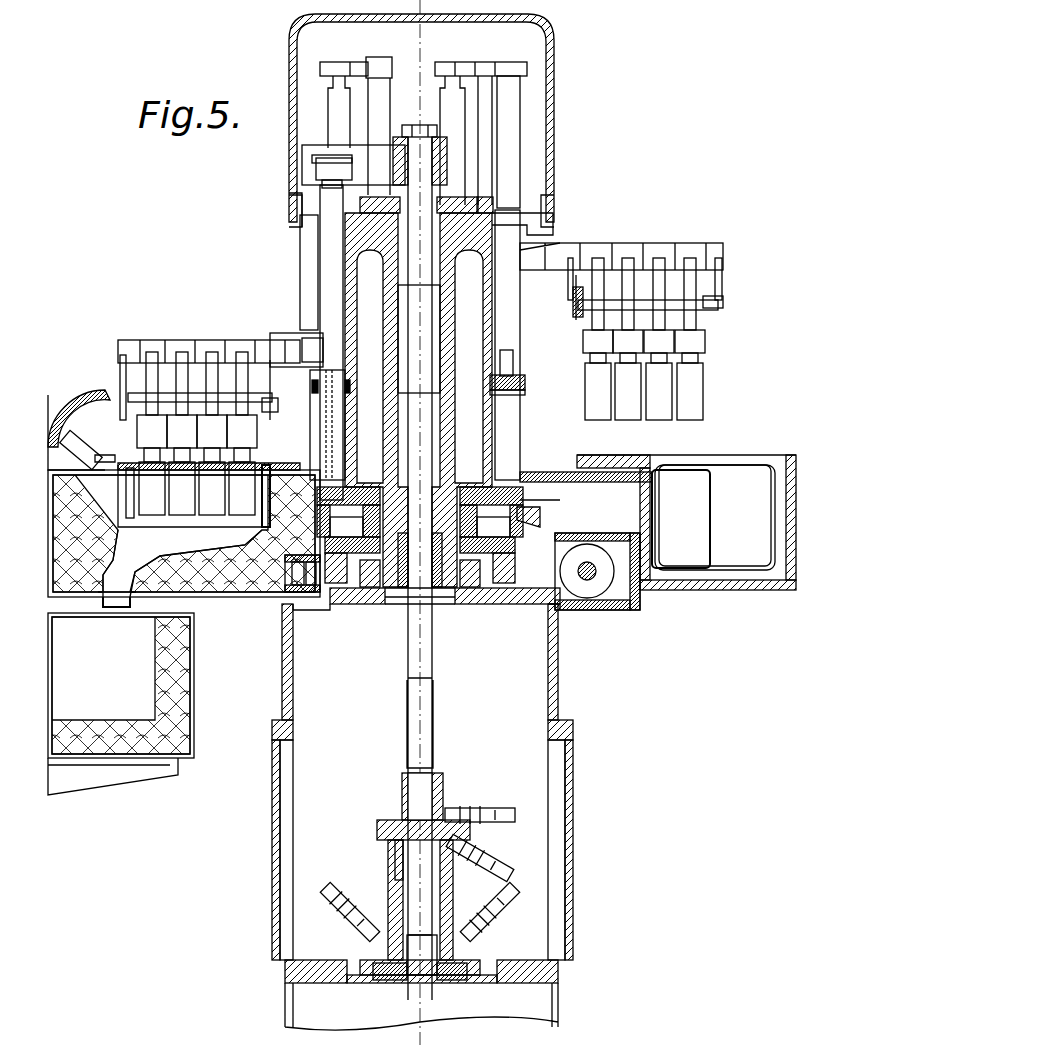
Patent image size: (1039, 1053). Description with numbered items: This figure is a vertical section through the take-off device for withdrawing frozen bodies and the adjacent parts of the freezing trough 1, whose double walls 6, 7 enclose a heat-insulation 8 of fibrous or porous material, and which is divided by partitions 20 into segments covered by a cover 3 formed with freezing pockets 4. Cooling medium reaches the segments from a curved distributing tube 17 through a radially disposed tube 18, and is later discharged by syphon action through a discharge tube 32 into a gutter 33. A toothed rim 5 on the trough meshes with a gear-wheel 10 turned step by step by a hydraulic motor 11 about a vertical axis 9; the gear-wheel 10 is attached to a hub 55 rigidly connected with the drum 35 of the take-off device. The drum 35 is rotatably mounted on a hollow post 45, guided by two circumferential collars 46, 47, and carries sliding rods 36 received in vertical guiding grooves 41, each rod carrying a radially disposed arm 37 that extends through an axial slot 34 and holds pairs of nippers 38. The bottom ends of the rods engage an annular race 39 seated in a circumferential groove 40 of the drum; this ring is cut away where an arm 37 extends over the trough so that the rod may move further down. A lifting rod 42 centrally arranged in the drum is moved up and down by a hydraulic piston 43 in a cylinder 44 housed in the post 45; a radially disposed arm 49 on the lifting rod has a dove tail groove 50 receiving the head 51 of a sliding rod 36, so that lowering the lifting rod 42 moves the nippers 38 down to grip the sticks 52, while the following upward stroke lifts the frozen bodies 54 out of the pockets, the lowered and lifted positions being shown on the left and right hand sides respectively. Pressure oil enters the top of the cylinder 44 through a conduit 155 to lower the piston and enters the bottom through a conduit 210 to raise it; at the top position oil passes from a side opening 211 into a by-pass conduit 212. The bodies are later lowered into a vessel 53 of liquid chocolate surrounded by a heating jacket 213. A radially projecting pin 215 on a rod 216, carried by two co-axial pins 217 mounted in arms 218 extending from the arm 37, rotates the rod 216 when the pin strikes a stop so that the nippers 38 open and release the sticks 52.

The freezing trough 1 is at (226, 600).
The cover 3 is at (265, 462).
The freezing pockets 4 is at (250, 462).
The toothed rim 5 is at (300, 582).
The double wall 6 is at (302, 496).
The double wall 7 is at (302, 520).
The heat-insulation 8 is at (250, 600).
The vertical axis 9 is at (420, 52).
The gear-wheel 10 is at (518, 600).
The hydraulic motor 11 is at (600, 597).
The distributing tube 17 is at (56, 420).
The radially disposed tube 18 is at (78, 452).
The partition 20 is at (100, 505).
The discharge tube 32 is at (185, 600).
The gutter 33 is at (162, 668).
The axial slot 34 is at (310, 238).
The drum 35 is at (492, 215).
The sliding rods 36 is at (510, 160).
The radially disposed arm 37 is at (226, 345).
The nippers 38 is at (186, 380).
The annular race 39 is at (526, 394).
The circumferential groove 40 is at (526, 382).
The vertical guiding groove 41 is at (310, 465).
The lifting rod 42 is at (428, 158).
The hydraulic piston 43 is at (428, 945).
The cylinder 44 is at (455, 886).
The hollow post 45 is at (572, 692).
The circumferential collar 46 is at (476, 600).
The circumferential collar 47 is at (528, 517).
The lifting arm 49 is at (323, 150).
The dove tail groove 50 is at (320, 158).
The head 51 is at (520, 70).
The sticks 52 is at (152, 458).
The vessel 53 is at (752, 466).
The frozen bodies 54 is at (700, 392).
The hub 55 is at (540, 506).
The conduit 155 is at (520, 862).
The conduit 210 is at (505, 905).
The side opening 211 is at (396, 862).
The by-pass conduit 212 is at (398, 828).
The heating jacket 213 is at (688, 595).
The radially projecting pin 215 is at (275, 396).
The rod 216 is at (128, 364).
The co-axial pins 217 is at (580, 288).
The arm 218 is at (122, 380).